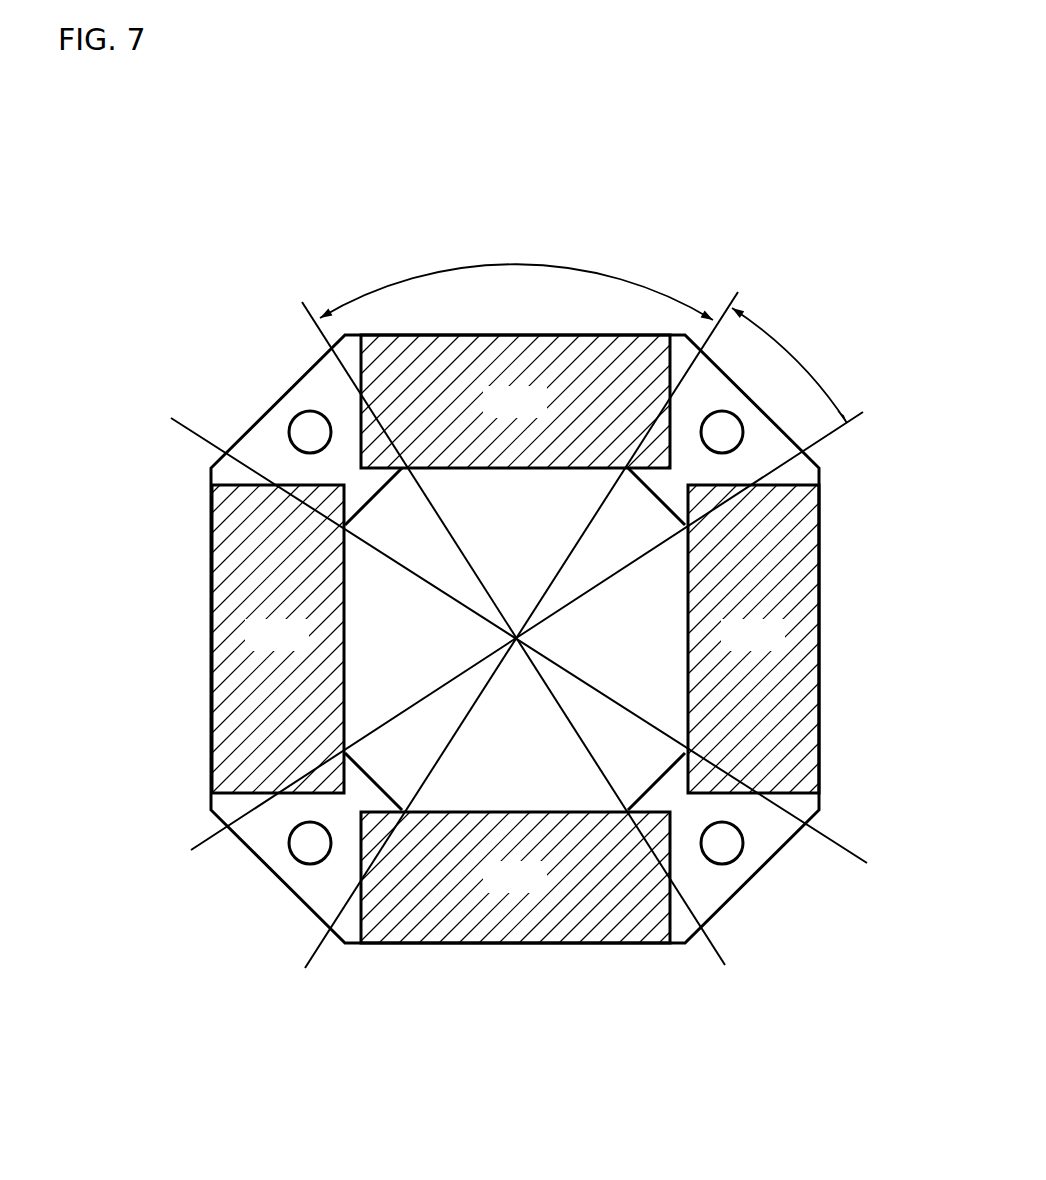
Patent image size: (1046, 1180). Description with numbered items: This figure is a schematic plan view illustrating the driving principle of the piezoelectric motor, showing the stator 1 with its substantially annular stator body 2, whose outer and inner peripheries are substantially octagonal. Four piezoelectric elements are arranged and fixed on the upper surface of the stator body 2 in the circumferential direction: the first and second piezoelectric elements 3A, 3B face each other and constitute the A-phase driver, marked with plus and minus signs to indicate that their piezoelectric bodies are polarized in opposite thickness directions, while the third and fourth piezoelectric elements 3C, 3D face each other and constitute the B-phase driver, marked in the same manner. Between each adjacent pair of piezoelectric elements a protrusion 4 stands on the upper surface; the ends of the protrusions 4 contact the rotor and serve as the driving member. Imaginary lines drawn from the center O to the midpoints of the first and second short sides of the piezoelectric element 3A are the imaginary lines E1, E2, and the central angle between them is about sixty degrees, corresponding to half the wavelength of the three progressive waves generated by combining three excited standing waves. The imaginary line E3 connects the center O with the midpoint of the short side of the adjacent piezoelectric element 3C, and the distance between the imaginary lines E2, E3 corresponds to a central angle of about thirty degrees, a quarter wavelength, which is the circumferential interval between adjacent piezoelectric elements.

The stator 1 is at (240, 220).
The stator body 2 is at (242, 433).
The first piezoelectric element 3A is at (590, 368).
The second piezoelectric element 3B is at (560, 925).
The third piezoelectric element 3C is at (805, 556).
The fourth piezoelectric element 3D is at (228, 692).
The protrusion 4 is at (297, 413).
The imaginary line E1 is at (304, 300).
The imaginary line E2 is at (727, 307).
The imaginary line E3 is at (852, 428).
The center O is at (520, 640).